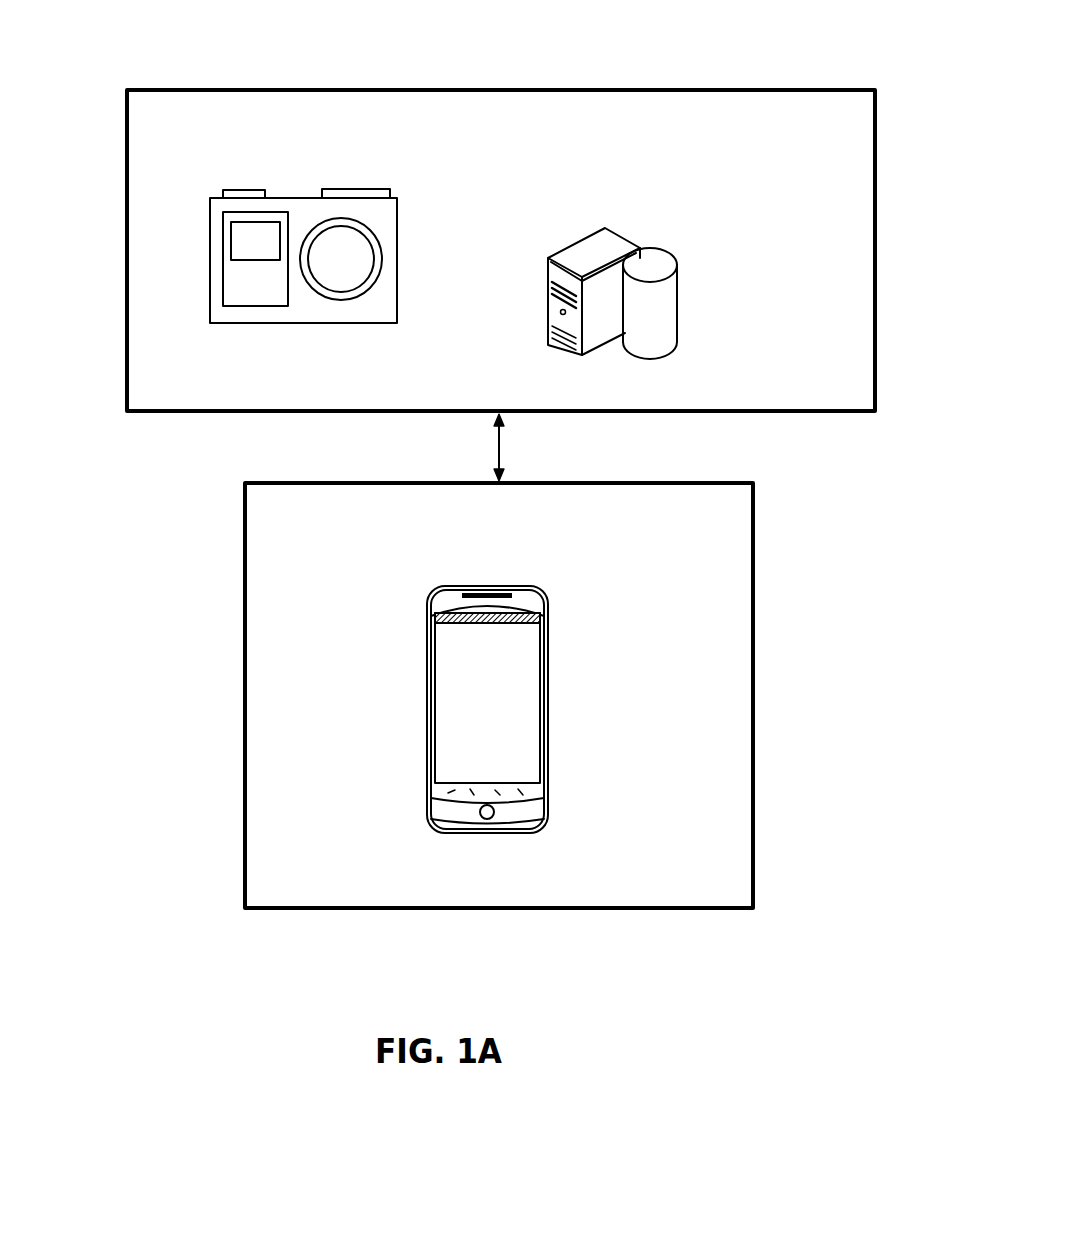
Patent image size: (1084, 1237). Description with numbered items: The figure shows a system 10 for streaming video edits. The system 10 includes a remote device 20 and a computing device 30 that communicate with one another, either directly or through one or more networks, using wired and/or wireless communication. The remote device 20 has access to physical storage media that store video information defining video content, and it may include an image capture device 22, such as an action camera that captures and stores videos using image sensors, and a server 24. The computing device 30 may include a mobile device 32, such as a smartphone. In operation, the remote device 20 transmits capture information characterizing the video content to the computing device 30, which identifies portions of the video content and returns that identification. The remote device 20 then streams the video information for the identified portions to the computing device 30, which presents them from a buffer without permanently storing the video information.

The system 10 is at (501, 455).
The remote device 20 is at (474, 236).
The image capture device 22 is at (398, 227).
The server 24 is at (627, 232).
The computing device 30 is at (499, 670).
The mobile device 32 is at (549, 621).